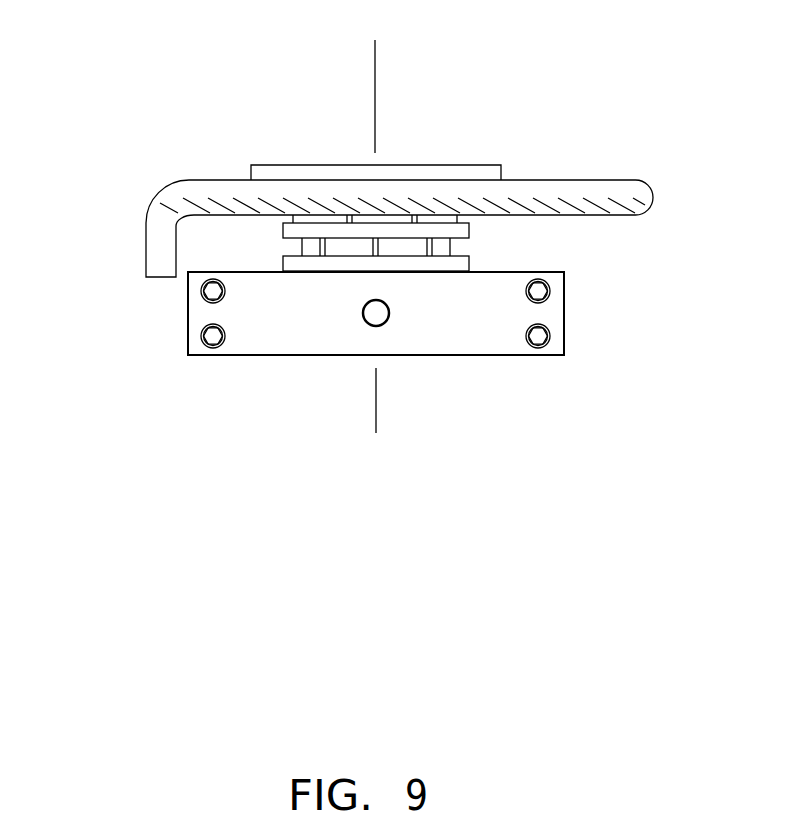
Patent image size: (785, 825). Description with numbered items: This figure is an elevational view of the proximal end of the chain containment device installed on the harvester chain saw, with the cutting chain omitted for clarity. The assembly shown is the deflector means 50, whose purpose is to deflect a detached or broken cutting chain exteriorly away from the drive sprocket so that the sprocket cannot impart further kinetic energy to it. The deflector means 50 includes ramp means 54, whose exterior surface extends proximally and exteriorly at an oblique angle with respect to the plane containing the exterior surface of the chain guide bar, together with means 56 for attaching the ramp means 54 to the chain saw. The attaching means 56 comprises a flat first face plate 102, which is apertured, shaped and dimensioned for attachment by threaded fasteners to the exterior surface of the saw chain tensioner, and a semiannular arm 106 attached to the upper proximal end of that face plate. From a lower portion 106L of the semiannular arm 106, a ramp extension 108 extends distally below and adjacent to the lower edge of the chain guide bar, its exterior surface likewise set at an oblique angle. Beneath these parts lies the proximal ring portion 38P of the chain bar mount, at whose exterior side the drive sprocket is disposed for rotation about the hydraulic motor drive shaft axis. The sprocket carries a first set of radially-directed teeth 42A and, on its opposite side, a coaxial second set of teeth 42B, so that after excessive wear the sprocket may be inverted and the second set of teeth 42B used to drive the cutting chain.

The deflector means 50 is at (602, 115).
The ramp means 54 is at (110, 230).
The means for attaching the ramp means 56 is at (263, 123).
The first face plate 102 is at (423, 173).
The semiannular arm 106 is at (568, 193).
The lower portion of the semiannular arm 106L is at (200, 192).
The ramp extension 108 is at (145, 258).
The first set of radially-directed teeth 42A is at (430, 232).
The second set of radially-directed teeth 42B is at (457, 218).
The proximal ring portion 38P is at (460, 320).